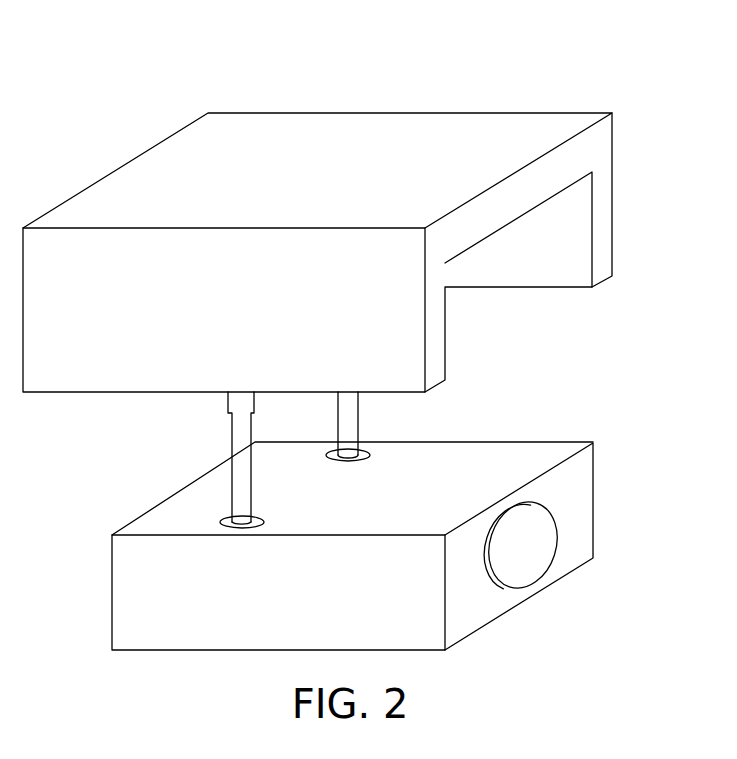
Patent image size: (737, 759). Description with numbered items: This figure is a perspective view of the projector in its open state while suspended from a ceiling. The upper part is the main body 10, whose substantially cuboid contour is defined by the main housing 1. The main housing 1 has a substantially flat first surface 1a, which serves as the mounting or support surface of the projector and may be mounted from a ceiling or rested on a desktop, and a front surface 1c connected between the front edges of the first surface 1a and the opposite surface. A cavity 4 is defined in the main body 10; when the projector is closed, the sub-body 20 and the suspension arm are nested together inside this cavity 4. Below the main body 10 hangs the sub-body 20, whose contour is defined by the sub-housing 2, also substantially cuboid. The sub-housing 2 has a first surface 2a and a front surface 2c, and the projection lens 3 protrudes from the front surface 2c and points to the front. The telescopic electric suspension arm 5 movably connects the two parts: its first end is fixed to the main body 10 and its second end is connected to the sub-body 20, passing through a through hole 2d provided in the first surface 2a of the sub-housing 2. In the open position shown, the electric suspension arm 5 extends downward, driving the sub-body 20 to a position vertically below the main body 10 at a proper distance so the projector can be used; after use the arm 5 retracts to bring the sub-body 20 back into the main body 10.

The main housing 1 is at (347, 216).
The first surface 1a is at (357, 128).
The front surface 1c is at (603, 147).
The main body 10 is at (347, 205).
The cavity 4 is at (528, 315).
The sub-housing 2 is at (391, 524).
The first surface 2a is at (450, 462).
The front surface 2c is at (478, 613).
The positioning hole 2d is at (258, 520).
The projection lens 3 is at (538, 560).
The telescopic electric suspension arm 5 is at (232, 437).
The sub-body 20 is at (410, 524).